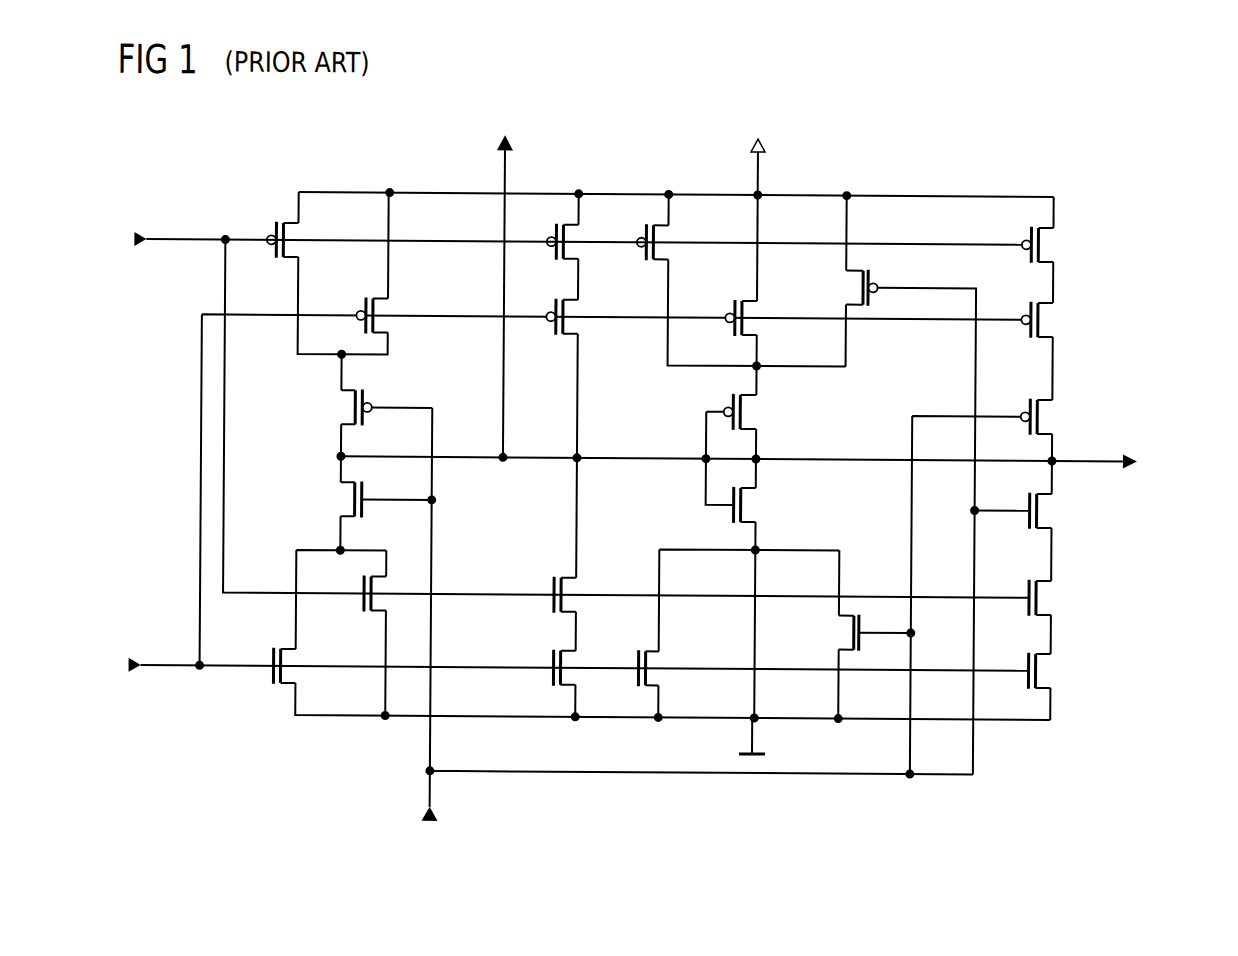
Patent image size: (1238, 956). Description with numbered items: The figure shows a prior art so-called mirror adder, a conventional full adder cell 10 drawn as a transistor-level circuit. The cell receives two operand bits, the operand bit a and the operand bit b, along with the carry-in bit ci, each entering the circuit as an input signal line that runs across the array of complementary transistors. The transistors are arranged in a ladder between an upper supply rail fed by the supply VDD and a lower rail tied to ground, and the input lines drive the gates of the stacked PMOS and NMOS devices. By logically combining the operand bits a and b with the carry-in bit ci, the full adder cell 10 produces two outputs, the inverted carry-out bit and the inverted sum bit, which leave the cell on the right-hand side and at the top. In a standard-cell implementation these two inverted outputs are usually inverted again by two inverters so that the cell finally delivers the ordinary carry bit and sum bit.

The full adder cell 10 is at (306, 166).
The operand bit a is at (566, 241).
The operand bit b is at (567, 668).
The carry-in bit ci is at (696, 635).
The supply voltage VDD is at (760, 147).